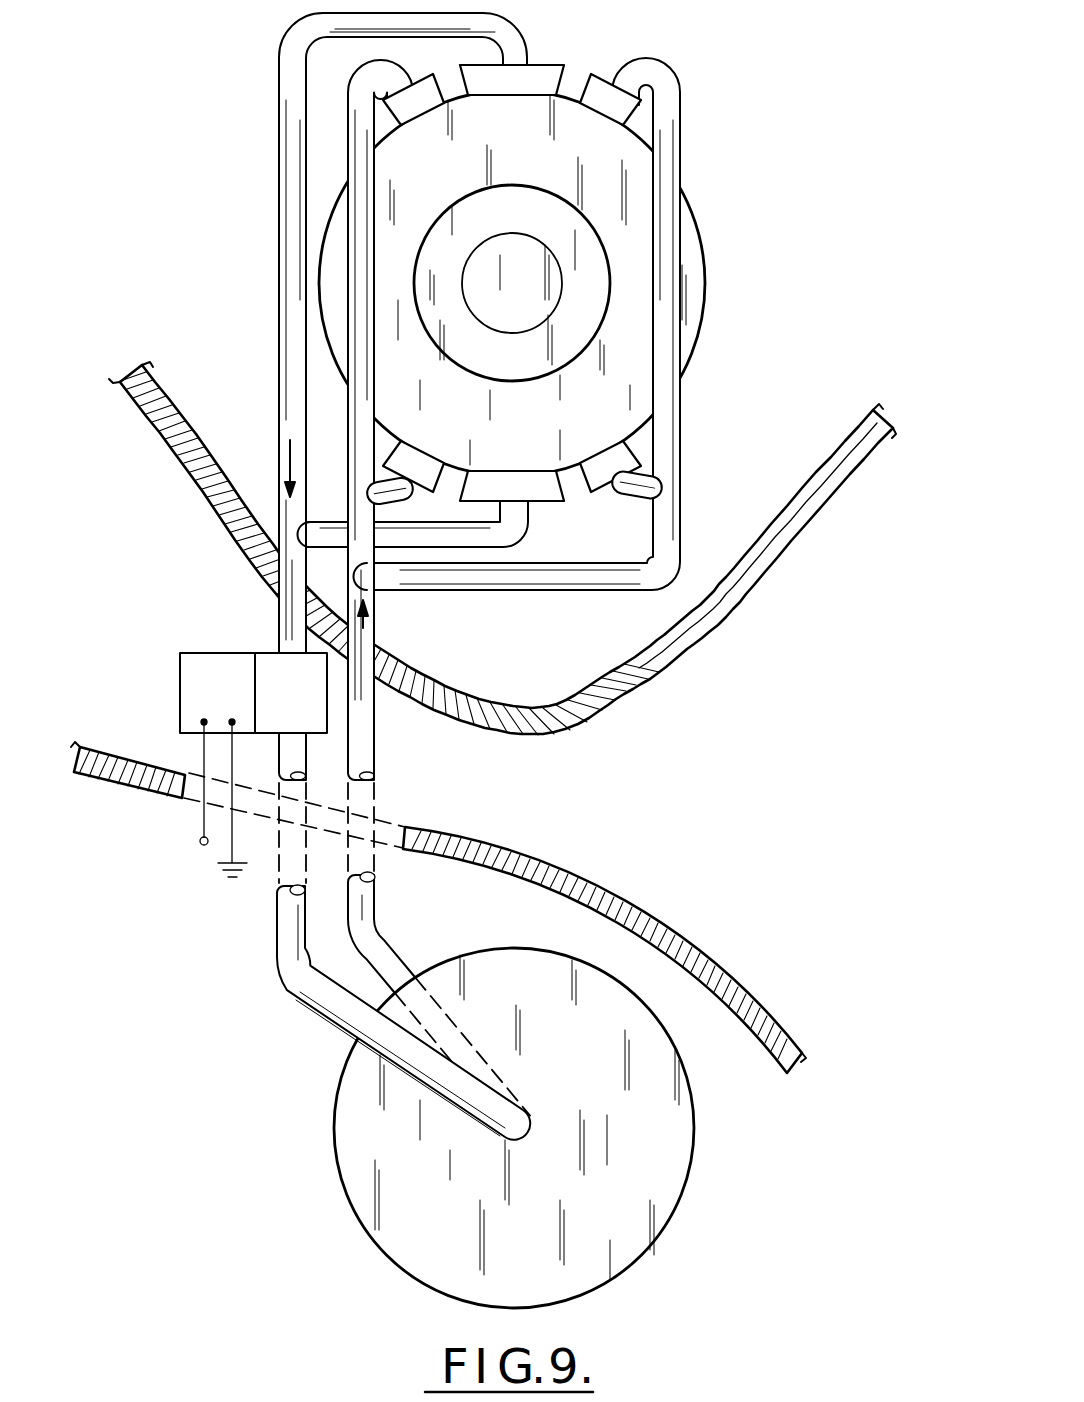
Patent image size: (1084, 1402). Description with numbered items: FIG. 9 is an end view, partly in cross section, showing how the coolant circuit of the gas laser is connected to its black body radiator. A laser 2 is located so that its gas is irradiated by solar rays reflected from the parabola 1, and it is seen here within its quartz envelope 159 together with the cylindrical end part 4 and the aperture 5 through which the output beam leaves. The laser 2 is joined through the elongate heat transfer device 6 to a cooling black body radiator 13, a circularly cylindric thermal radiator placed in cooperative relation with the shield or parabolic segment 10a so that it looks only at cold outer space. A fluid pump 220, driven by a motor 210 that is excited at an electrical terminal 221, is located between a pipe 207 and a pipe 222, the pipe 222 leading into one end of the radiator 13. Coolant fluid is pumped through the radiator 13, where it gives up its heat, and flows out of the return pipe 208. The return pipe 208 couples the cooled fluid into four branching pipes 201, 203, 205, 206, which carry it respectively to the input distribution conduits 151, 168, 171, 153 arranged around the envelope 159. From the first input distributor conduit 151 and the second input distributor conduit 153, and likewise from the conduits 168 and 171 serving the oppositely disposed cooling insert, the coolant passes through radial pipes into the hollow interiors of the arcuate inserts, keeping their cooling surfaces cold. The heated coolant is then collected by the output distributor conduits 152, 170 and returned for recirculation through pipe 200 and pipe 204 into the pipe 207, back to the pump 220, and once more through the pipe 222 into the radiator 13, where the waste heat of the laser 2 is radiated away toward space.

The parabola 1 is at (190, 476).
The laser 2 is at (558, 283).
The cylindrical end part 4 is at (568, 366).
The aperture 5 is at (552, 300).
The heat transfer device 6 is at (387, 772).
The parabolic cylinder segment 10a is at (110, 789).
The thermal radiator 13 is at (697, 1163).
The first input distributor conduit 151 is at (432, 82).
The output distributor conduit 152 is at (537, 64).
The second input distributor conduit 153 is at (604, 80).
The envelope 159 is at (703, 283).
The distributor conduit 168 is at (418, 445).
The output distributor conduit 170 is at (512, 477).
The distributor conduit 171 is at (604, 456).
The pipe 200 is at (281, 100).
The branching pipe 201 is at (355, 176).
The branching pipe 203 is at (405, 497).
The pipe 204 is at (531, 509).
The branching pipe 205 is at (648, 498).
The branching pipe 206 is at (671, 229).
The pipe 207 is at (284, 621).
The return pipe 208 is at (378, 626).
The motor 210 is at (265, 765).
The fluid pump 220 is at (327, 697).
The electrical terminal 221 is at (201, 844).
The pipe 222 is at (307, 1003).